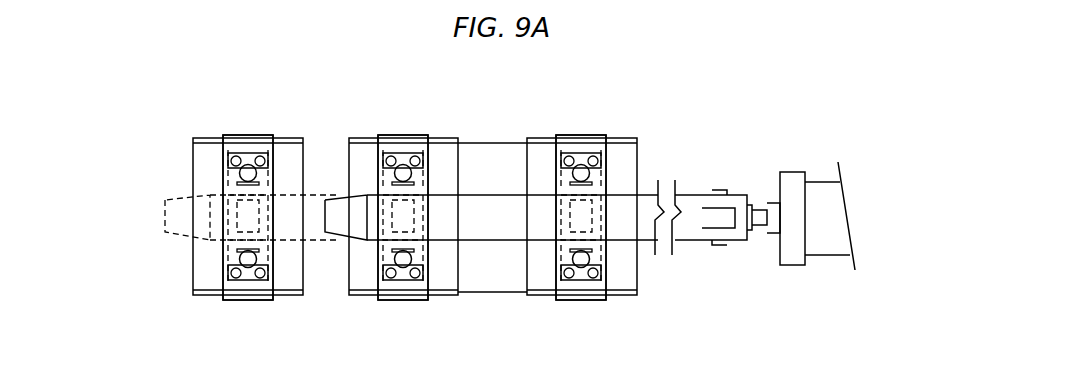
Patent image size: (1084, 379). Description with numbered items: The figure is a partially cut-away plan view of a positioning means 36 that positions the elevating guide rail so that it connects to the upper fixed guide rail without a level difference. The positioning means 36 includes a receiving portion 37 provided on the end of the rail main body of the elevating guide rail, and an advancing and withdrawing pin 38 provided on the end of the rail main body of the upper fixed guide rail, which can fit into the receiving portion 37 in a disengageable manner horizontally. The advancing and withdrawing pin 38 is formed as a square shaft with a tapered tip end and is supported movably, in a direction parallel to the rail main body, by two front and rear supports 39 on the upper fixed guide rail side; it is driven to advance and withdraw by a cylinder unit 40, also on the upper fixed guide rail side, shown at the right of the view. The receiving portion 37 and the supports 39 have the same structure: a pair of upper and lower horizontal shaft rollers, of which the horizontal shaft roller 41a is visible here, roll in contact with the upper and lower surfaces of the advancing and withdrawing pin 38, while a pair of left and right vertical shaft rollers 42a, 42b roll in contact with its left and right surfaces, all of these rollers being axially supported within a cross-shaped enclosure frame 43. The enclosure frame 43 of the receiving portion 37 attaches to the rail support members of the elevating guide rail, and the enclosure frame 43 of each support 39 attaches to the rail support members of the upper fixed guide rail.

The positioning means 36 is at (627, 133).
The receiving portion 37 is at (247, 134).
The advancing and withdrawing pin 38 is at (497, 225).
The support 39 is at (402, 134).
The cylinder unit 40 is at (827, 245).
The horizontal shaft roller 41a is at (228, 212).
The vertical shaft roller 42a is at (232, 256).
The vertical shaft roller 42b is at (232, 175).
The enclosure frame 43 is at (247, 300).